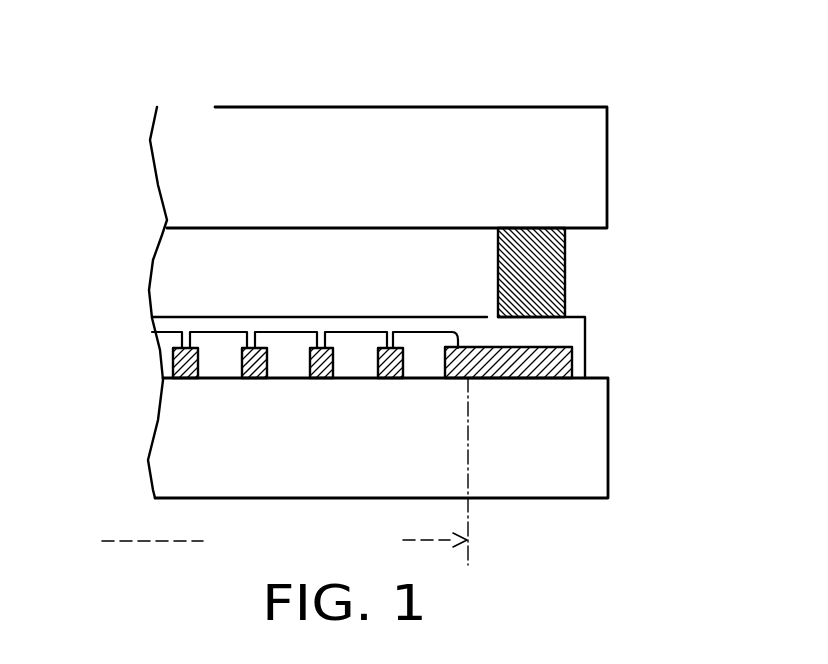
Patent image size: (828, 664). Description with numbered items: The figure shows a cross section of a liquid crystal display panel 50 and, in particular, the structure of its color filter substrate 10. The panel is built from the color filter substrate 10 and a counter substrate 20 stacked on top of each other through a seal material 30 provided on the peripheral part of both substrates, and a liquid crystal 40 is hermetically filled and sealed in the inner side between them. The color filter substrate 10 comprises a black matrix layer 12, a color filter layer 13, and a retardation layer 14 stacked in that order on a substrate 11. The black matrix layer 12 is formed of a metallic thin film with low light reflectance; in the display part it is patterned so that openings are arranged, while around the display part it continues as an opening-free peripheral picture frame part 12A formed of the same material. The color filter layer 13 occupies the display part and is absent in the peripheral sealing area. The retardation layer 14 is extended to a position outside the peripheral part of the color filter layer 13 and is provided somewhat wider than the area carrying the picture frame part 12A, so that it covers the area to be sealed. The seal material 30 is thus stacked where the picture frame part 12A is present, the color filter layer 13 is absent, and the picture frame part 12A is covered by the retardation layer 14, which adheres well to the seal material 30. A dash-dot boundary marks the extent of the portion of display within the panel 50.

The liquid crystal display panel 50 is at (387, 88).
The counter substrate 20 is at (145, 108).
The liquid crystal 40 is at (183, 253).
The seal material 30 is at (543, 268).
The color filter substrate 10 is at (143, 318).
The substrate 11 is at (590, 425).
The black matrix layer 12 is at (387, 380).
The picture frame part 12A is at (572, 357).
The color filter layer 13 is at (417, 343).
The retardation layer 14 is at (207, 327).